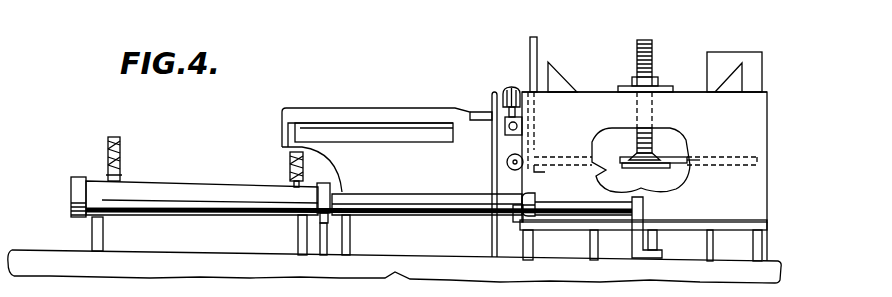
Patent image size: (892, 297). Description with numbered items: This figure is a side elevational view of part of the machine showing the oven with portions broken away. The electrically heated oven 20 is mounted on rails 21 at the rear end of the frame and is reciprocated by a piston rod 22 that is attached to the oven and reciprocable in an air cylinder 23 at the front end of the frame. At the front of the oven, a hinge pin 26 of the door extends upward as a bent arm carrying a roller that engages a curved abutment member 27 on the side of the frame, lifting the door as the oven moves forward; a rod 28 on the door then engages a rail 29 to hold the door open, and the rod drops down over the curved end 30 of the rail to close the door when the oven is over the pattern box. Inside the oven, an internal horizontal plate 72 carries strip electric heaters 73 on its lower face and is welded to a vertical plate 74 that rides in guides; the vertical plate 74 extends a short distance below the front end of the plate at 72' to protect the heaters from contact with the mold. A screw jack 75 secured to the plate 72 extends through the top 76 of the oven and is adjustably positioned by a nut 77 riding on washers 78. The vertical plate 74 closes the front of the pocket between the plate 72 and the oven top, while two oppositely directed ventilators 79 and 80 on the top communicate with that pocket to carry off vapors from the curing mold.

The electrically heated oven 20 is at (736, 127).
The rails 21 is at (711, 224).
The piston rod 22 is at (403, 214).
The air cylinder 23 is at (203, 180).
The hinge pin 26 is at (510, 88).
The curved abutment member 27 is at (490, 93).
The rod 28 is at (507, 164).
The rail 29 is at (387, 129).
The curved end 30 is at (282, 140).
The internal horizontal plate 72 is at (645, 155).
The lower extension of vertical plate 72' is at (552, 179).
The strip electric heaters 73 is at (713, 168).
The vertical plate 74 is at (547, 136).
The screw jack 75 is at (654, 58).
The top of the oven 76 is at (590, 94).
The nut 77 is at (659, 81).
The washers 78 is at (673, 91).
The ventilator 79 is at (553, 72).
The ventilator 80 is at (734, 72).